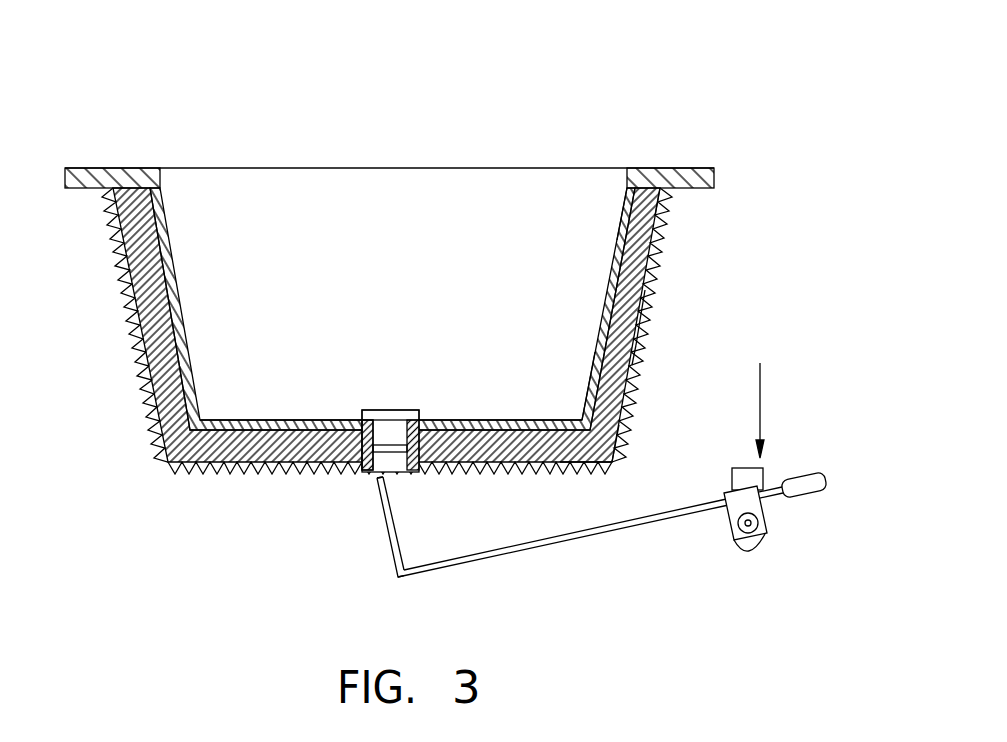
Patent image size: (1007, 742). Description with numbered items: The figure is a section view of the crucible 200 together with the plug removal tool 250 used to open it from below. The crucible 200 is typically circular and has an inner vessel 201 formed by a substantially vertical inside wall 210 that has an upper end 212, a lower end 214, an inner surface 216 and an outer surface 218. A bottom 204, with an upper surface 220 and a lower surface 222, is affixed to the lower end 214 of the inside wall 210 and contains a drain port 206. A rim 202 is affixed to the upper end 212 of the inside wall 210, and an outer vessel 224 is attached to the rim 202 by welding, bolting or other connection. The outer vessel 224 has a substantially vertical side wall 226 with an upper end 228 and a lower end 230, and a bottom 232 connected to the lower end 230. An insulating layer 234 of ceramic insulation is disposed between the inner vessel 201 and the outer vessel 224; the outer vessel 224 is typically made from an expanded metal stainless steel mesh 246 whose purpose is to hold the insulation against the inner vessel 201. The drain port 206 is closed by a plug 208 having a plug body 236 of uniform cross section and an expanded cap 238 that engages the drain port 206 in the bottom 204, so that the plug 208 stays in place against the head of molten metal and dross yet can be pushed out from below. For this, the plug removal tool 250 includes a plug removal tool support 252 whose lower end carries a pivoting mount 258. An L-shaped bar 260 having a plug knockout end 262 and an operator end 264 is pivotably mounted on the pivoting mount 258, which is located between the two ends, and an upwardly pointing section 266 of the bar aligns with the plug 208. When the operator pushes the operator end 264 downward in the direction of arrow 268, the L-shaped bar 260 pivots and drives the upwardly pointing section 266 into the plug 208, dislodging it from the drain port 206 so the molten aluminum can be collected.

The crucible 200 is at (580, 68).
The inner vessel 201 is at (167, 238).
The rim 202 is at (670, 168).
The bottom 204 is at (238, 425).
The drain port 206 is at (388, 466).
The plug 208 is at (385, 428).
The inside wall 210 is at (163, 200).
The upper end 212 is at (612, 203).
The lower end 214 is at (574, 383).
The inner surface 216 is at (610, 280).
The outer surface 218 is at (657, 272).
The upper surface 220 is at (485, 423).
The lower surface 222 is at (485, 473).
The outer vessel 224 is at (668, 308).
The side wall 226 is at (643, 333).
The upper end 228 is at (690, 204).
The lower end 230 is at (648, 437).
The bottom 232 is at (578, 470).
The insulating layer 234 is at (653, 353).
The plug body 236 is at (380, 432).
The expanded cap 238 is at (402, 410).
The expanded metal stainless steel mesh 246 is at (120, 400).
The plug removal tool 250 is at (452, 588).
The plug removal tool support 252 is at (745, 470).
The pivoting mount 258 is at (745, 533).
The L-shaped bar 260 is at (567, 541).
The plug knockout end 262 is at (389, 541).
The operator end 264 is at (807, 495).
The upwardly pointing section 266 is at (377, 480).
The arrow 268 is at (760, 405).